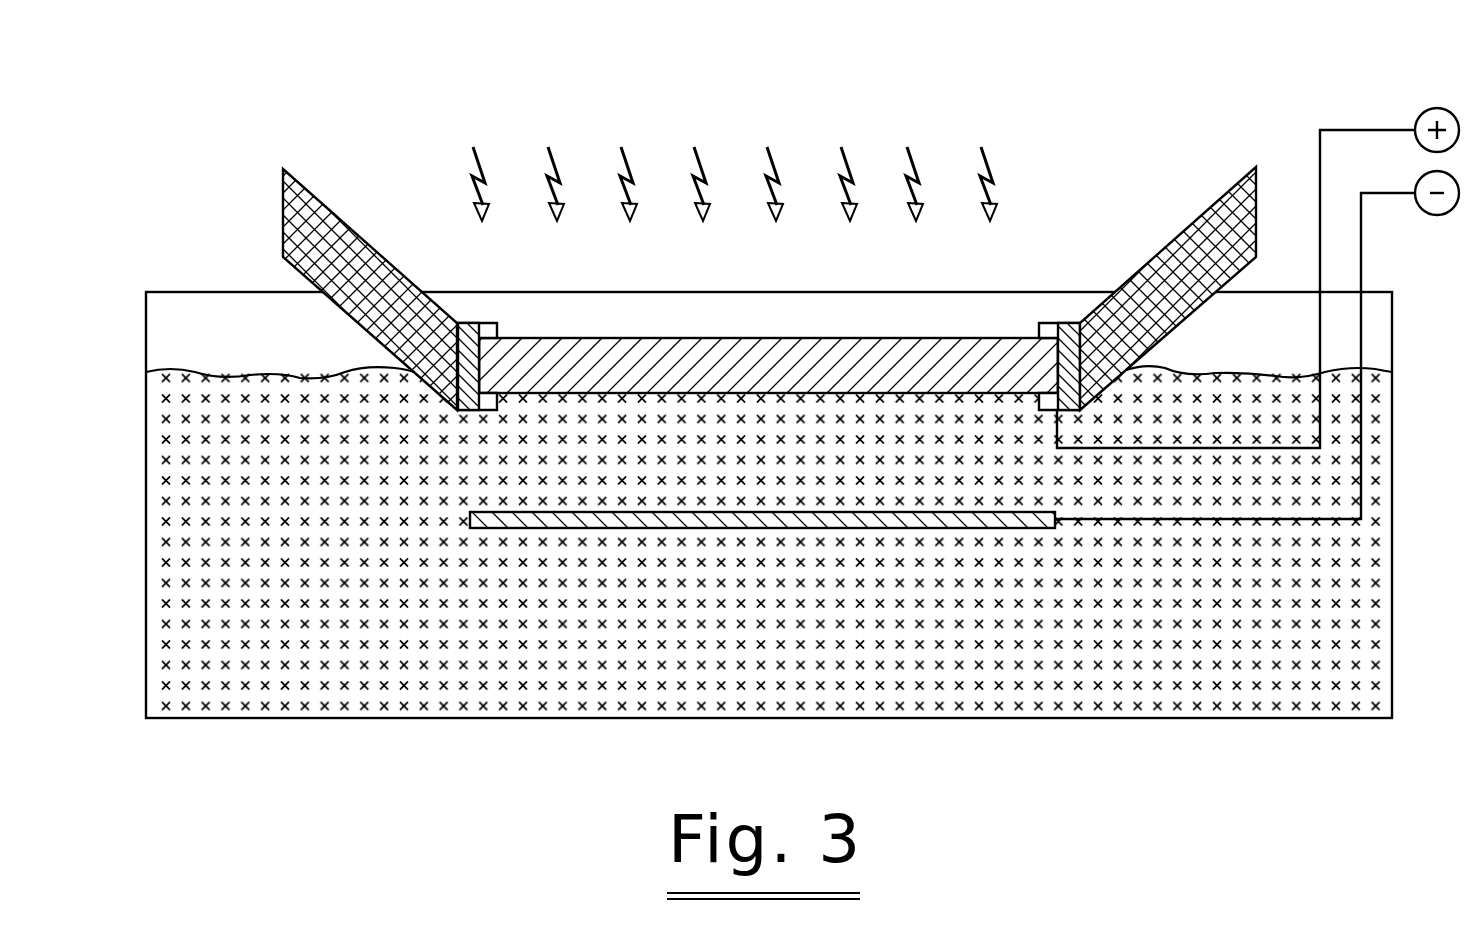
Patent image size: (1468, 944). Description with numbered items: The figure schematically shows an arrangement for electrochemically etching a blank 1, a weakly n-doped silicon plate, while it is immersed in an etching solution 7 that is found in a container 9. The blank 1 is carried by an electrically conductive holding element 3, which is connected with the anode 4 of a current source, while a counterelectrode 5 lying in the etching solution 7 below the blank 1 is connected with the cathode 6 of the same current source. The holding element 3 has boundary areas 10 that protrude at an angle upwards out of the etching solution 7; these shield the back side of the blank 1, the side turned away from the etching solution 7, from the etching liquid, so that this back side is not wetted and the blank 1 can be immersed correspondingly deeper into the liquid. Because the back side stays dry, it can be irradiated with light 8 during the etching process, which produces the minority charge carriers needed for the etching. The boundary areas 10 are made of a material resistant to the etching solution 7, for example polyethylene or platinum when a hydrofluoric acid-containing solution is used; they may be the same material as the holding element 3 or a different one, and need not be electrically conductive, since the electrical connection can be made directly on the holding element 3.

The blank 1 is at (587, 378).
The holding element 3 is at (465, 410).
The anode 4 is at (1437, 108).
The counterelectrode 5 is at (905, 528).
The cathode 6 is at (1437, 215).
The etching solution 7 is at (203, 368).
The light 8 is at (622, 148).
The container 9 is at (1393, 586).
The boundary areas 10 is at (1160, 250).